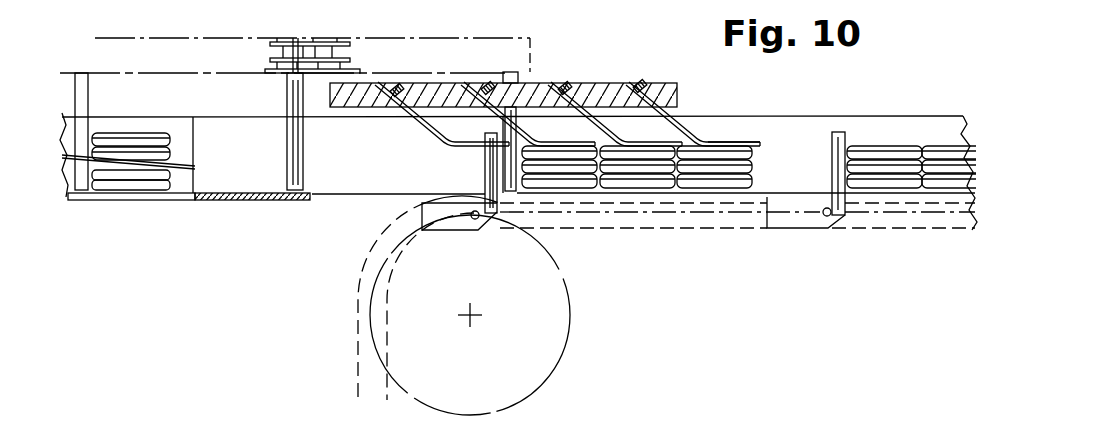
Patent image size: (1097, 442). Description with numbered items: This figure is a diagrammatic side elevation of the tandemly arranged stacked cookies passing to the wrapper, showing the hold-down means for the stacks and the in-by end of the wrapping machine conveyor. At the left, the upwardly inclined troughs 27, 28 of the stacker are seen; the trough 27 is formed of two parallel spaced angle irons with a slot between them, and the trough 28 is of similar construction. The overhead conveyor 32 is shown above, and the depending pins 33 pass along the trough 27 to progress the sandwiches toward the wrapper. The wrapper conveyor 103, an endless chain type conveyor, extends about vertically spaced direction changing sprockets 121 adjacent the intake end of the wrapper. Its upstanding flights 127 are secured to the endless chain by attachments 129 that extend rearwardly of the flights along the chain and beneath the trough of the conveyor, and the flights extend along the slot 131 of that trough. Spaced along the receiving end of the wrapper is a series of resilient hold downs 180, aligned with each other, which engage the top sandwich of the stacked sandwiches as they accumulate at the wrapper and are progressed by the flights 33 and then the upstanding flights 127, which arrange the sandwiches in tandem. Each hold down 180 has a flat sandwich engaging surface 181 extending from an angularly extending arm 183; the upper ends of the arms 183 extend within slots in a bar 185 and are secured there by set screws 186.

The trough 27 is at (166, 118).
The trough 28 is at (150, 201).
The conveyor 32 is at (303, 38).
The depending pins 33 is at (287, 93).
The wrapper conveyor 103 is at (358, 341).
The direction changing sprockets 121 is at (560, 356).
The upstanding flights 127 is at (485, 171).
The attachments 129 is at (420, 207).
The slot 131 is at (767, 192).
The resilient hold downs 180 is at (441, 147).
The flat sandwich engaging surfaces 181 is at (726, 141).
The angularly extending arms 183 is at (596, 108).
The bar 185 is at (662, 83).
The set screws 186 is at (570, 83).